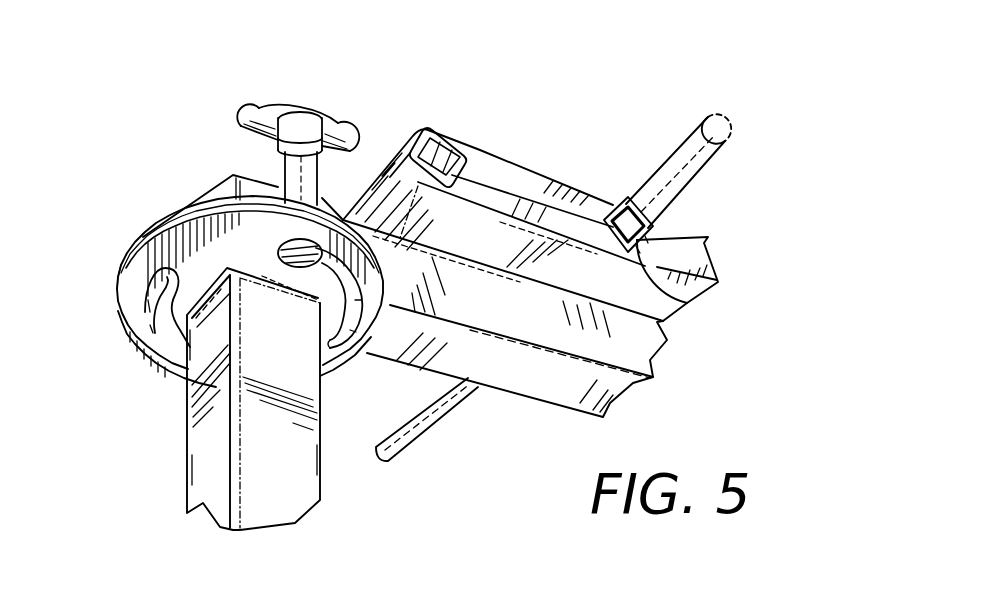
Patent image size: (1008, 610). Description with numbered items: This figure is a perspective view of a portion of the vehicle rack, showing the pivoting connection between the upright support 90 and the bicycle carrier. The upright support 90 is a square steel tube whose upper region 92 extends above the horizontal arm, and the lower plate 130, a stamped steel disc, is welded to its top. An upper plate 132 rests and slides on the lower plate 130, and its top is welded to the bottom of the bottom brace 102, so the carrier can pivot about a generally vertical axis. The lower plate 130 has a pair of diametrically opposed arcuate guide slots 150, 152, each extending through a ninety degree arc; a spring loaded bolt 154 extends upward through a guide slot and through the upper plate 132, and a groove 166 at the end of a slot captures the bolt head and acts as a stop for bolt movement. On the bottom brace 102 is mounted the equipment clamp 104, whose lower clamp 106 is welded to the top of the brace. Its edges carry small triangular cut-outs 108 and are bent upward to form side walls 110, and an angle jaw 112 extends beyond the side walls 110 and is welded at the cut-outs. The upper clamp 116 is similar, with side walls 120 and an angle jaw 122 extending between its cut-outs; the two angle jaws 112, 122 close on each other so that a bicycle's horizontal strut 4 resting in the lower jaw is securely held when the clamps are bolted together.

The horizontal strut 4 is at (727, 130).
The upright support 90 is at (200, 497).
The upper region 92 is at (210, 328).
The bottom brace 102 is at (628, 353).
The equipment clamp 104 is at (442, 125).
The lower clamp 106 is at (707, 262).
The triangular cut-outs 108 is at (687, 303).
The side walls 110 is at (405, 157).
The angle jaw 112 is at (649, 228).
The upper clamp 116 is at (518, 177).
The side walls 120 is at (532, 182).
The angle jaw 122 is at (627, 207).
The lower plate 130 is at (133, 318).
The upper plate 132 is at (163, 216).
The arcuate guide slot 150 is at (342, 357).
The arcuate guide slot 152 is at (187, 348).
The spring loaded bolt 154 is at (230, 268).
The groove 166 is at (117, 303).